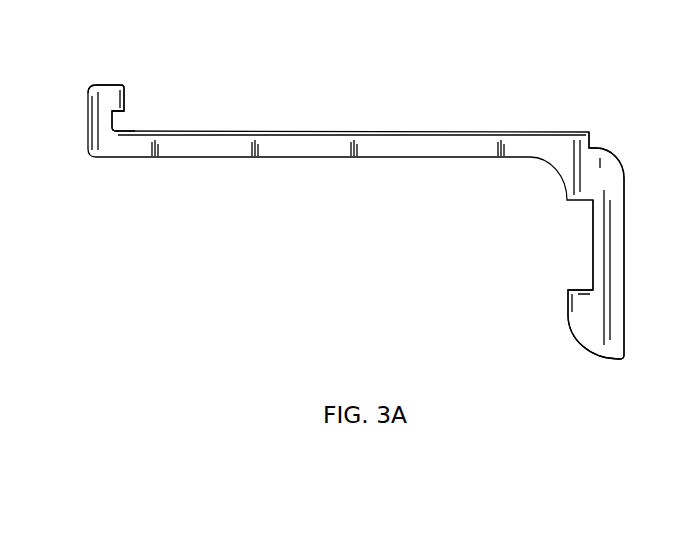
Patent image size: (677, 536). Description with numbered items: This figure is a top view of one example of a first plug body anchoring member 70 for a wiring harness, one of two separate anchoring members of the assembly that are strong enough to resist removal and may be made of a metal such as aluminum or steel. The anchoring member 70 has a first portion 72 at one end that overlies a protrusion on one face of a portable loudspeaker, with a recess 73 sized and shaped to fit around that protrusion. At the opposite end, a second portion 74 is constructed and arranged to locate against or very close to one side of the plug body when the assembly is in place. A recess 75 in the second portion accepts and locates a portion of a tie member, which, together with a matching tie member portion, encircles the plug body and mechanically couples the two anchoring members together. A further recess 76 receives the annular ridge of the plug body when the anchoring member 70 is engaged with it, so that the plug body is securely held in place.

The plug body anchoring member 70 is at (394, 112).
The first portion 72 is at (113, 95).
The recess 73 is at (118, 124).
The second portion 74 is at (587, 322).
The recess 75 is at (587, 260).
The recess 76 is at (596, 145).